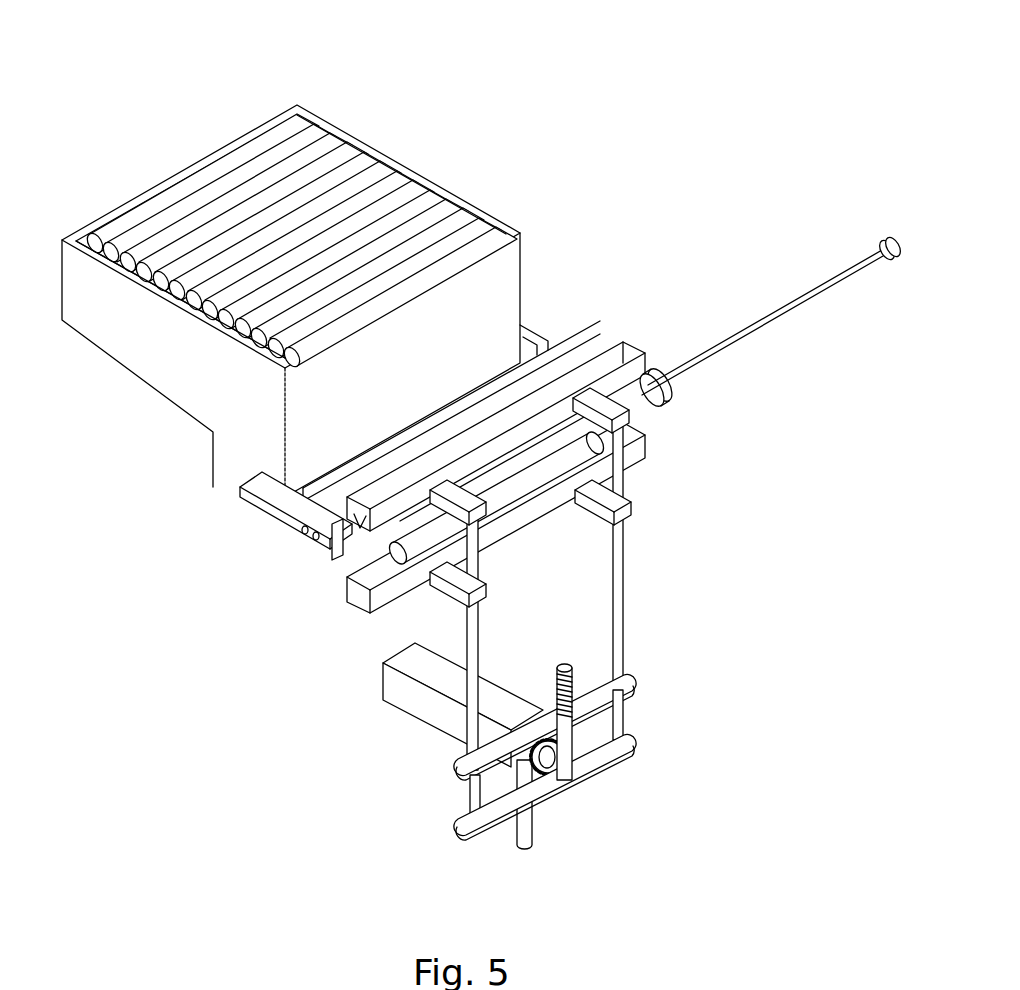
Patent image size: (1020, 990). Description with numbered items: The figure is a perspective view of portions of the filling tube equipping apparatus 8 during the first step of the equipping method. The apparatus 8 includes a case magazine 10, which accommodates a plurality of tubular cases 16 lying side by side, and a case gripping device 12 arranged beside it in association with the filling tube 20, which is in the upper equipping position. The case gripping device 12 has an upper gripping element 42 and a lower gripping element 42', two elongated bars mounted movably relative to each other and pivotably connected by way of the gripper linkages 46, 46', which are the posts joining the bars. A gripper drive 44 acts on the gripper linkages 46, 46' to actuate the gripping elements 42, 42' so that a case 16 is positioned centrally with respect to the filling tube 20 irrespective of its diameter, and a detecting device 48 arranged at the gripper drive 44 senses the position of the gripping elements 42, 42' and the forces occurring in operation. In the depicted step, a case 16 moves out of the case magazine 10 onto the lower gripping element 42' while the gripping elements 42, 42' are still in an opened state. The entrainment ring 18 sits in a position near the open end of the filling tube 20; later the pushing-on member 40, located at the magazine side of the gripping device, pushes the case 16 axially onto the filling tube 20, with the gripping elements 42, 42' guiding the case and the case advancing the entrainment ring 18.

The filling tube equipping apparatus 8 is at (314, 611).
The case magazine 10 is at (366, 125).
The case gripping device 12 is at (424, 505).
The tubular case 16 is at (212, 175).
The entrainment ring 18 is at (655, 383).
The filling tube 20 is at (763, 330).
The pushing-on member 40 is at (345, 560).
The upper gripping element 42 is at (496, 372).
The lower gripping element 42' is at (568, 517).
The gripper drive 44 is at (552, 790).
The gripper linkage 46 is at (434, 632).
The gripper linkage 46' is at (656, 539).
The detecting device 48 is at (586, 740).